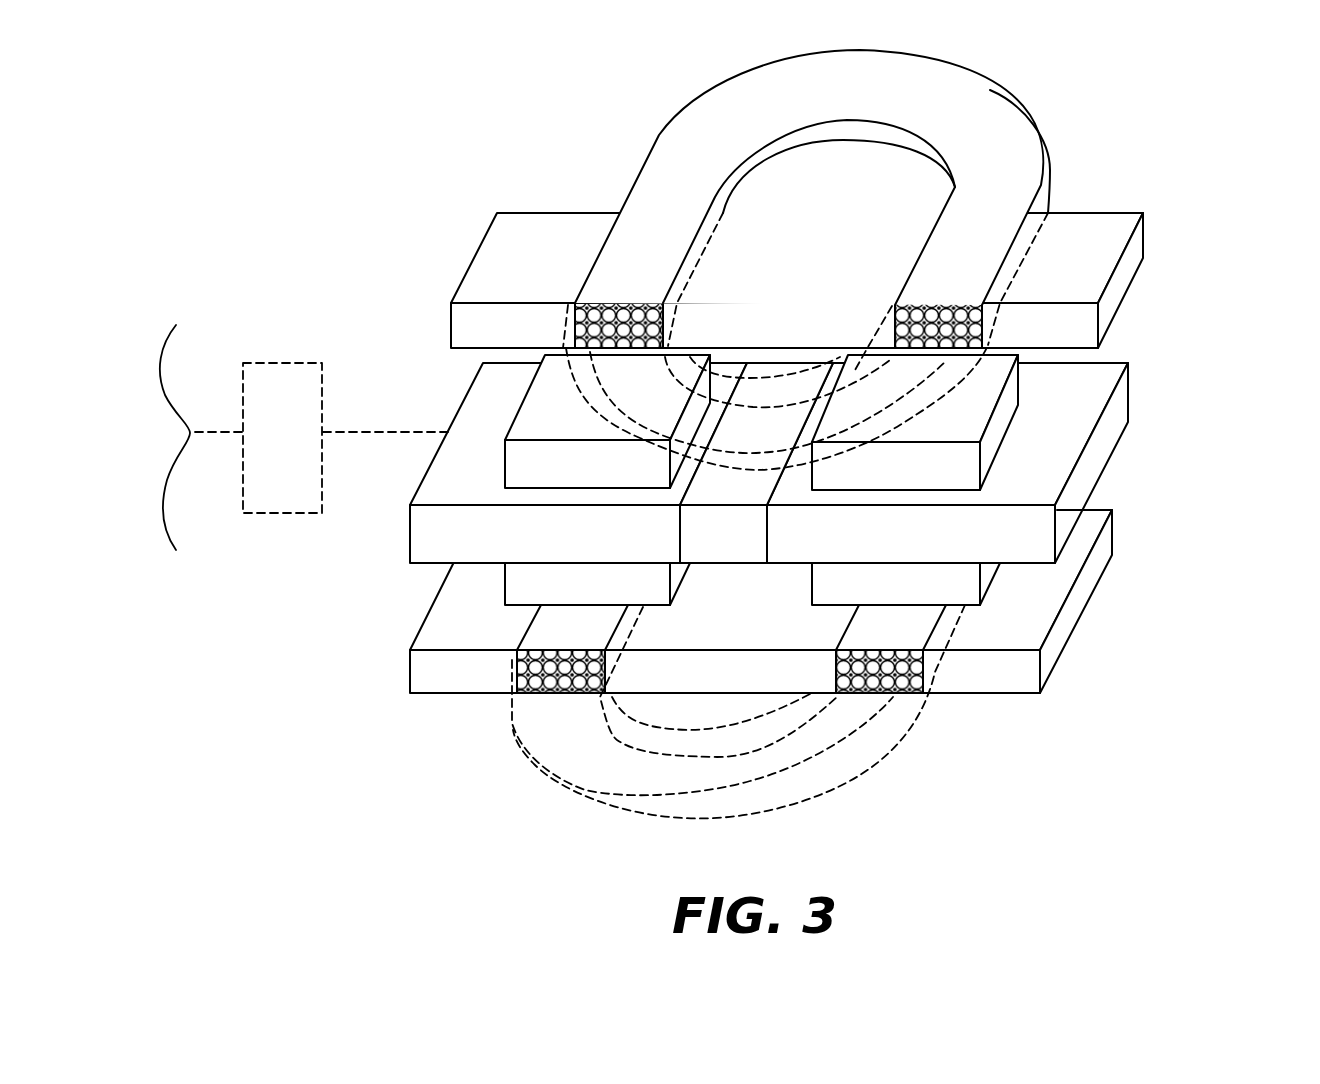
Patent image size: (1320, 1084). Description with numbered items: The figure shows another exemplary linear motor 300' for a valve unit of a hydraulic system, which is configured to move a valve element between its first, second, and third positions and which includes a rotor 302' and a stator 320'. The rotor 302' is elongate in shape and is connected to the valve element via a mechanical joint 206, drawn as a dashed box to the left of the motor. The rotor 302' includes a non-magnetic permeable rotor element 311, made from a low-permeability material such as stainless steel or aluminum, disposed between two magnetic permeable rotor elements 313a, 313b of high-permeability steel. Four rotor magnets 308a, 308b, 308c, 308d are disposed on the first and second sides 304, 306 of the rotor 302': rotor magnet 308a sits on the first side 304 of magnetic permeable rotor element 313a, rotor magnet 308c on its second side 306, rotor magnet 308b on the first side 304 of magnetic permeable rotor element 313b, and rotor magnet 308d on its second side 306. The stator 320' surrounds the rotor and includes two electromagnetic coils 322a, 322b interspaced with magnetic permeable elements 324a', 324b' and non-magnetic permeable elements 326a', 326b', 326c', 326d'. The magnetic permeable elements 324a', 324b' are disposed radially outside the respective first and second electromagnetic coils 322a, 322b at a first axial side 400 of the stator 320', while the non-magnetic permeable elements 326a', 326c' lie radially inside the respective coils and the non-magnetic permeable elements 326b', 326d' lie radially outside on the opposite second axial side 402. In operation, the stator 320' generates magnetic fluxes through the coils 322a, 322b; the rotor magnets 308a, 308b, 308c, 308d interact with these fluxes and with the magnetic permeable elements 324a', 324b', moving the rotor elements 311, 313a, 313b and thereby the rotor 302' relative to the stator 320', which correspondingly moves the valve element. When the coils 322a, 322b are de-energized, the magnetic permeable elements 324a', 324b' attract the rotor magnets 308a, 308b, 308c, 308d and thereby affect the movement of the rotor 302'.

The linear motor 300' is at (789, 445).
The stator 320' is at (772, 675).
The first electromagnetic coil 322a is at (988, 97).
The second electromagnetic coil 322b is at (917, 632).
The magnetic permeable element 324a' is at (795, 259).
The magnetic permeable element 324b' is at (772, 675).
The non-magnetic permeable element 326a' is at (802, 201).
The non-magnetic permeable element 326b' is at (1110, 280).
The non-magnetic permeable element 326c' is at (658, 745).
The non-magnetic permeable element 326d' is at (1110, 601).
The rotor 302' is at (789, 466).
The magnetic permeable rotor element 313a is at (450, 467).
The magnetic permeable rotor element 313b is at (1093, 400).
The non-magnetic permeable rotor element 311 is at (748, 560).
The rotor magnet 308a is at (543, 407).
The rotor magnet 308b is at (997, 380).
The rotor magnet 308c is at (543, 587).
The rotor magnet 308d is at (967, 583).
The mechanical joint 206 is at (258, 502).
The first axial side 400 is at (292, 284).
The second axial side 402 is at (1258, 542).
The first side 304 is at (393, 361).
The second side 306 is at (372, 655).